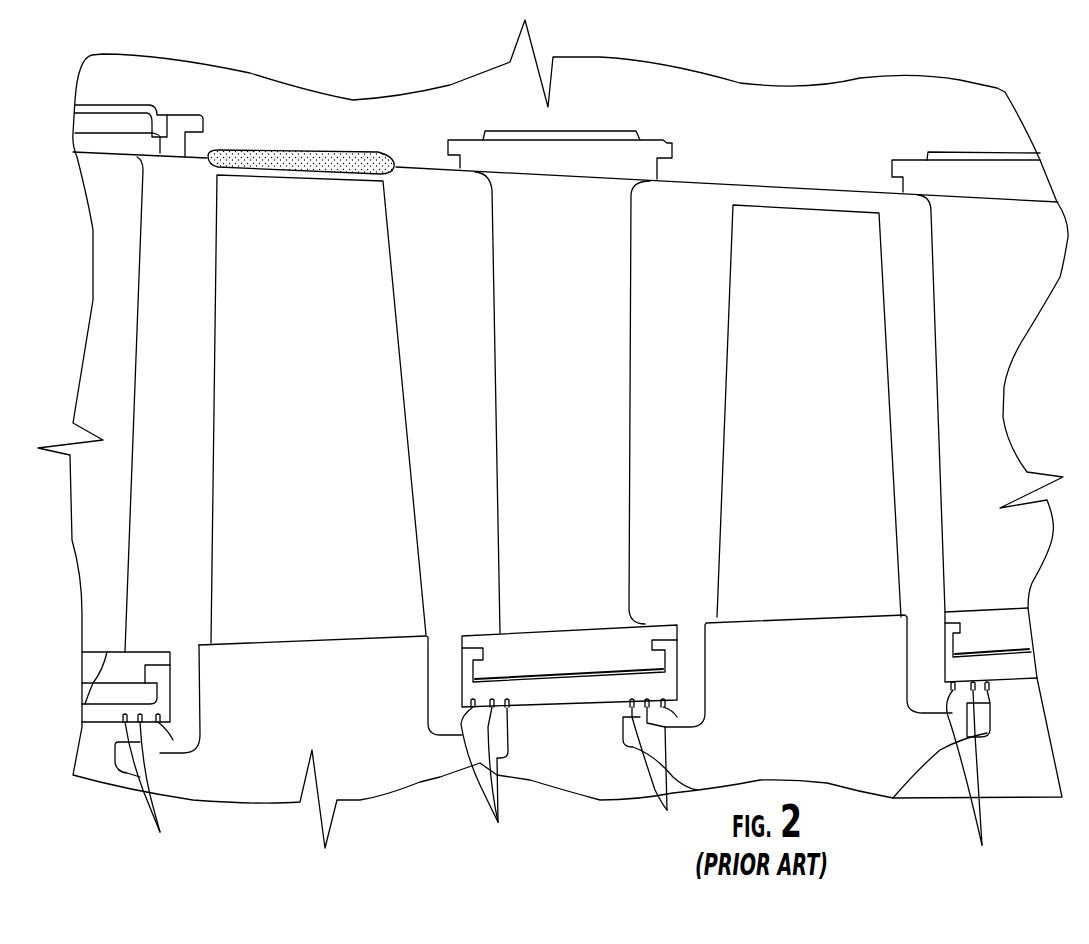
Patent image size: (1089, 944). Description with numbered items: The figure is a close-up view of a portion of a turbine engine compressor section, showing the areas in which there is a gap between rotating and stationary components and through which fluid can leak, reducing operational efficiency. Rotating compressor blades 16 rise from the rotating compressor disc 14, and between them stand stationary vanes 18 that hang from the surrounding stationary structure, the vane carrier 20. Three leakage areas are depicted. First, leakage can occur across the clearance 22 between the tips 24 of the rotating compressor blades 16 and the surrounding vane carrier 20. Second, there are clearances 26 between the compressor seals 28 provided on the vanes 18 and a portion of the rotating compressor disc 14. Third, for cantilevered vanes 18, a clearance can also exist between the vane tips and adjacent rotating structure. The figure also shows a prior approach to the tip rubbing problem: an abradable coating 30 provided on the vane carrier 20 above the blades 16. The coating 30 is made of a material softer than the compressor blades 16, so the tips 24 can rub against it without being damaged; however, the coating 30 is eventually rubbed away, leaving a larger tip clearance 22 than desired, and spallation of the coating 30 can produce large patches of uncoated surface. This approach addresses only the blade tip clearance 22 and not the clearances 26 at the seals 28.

The compressor disc 14 is at (326, 712).
The compressor blades 16 is at (306, 448).
The vanes 18 is at (568, 450).
The vane carrier 20 is at (712, 93).
The clearance 22 is at (728, 196).
The tips 24 is at (337, 181).
The clearances 26 is at (174, 750).
The compressor seals 28 is at (555, 780).
The abradable coating 30 is at (343, 153).